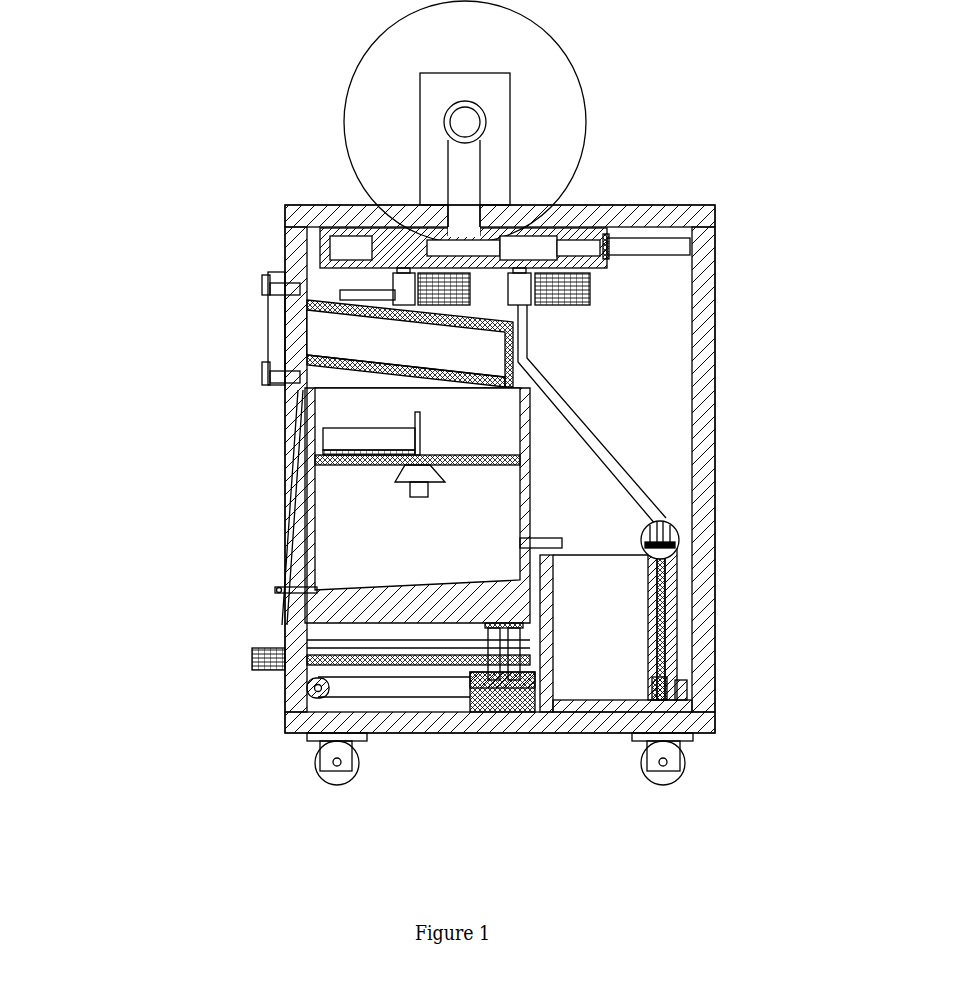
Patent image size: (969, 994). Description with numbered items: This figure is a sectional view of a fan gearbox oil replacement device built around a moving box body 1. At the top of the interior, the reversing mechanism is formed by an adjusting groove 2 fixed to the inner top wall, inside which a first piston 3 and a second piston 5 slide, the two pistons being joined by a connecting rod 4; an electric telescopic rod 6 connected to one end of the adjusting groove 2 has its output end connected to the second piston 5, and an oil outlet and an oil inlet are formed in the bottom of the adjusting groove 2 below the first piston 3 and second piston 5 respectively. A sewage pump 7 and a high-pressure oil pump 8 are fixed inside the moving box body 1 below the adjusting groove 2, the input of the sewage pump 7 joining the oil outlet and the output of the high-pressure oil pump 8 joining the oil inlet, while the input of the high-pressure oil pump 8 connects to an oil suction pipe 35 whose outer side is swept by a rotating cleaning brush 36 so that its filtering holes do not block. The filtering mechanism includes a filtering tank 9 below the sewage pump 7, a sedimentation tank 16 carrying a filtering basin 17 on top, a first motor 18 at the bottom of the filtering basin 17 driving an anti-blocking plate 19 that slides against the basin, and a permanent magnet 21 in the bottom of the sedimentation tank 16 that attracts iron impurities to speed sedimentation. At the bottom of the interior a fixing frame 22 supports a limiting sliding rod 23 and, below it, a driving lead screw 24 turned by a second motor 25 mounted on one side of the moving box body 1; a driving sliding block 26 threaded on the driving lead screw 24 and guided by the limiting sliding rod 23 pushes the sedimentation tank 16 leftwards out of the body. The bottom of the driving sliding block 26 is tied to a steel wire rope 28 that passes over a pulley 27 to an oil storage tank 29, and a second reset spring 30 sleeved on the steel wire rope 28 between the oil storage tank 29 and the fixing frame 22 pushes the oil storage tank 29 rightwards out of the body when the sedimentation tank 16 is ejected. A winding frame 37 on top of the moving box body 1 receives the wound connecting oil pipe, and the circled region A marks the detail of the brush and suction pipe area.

The moving box body 1 is at (703, 423).
The adjusting groove 2 is at (307, 267).
The first piston 3 is at (365, 245).
The connecting rod 4 is at (420, 236).
The second piston 5 is at (550, 240).
The electric telescopic rod 6 is at (690, 241).
The sewage pump 7 is at (393, 280).
The high-pressure oil pump 8 is at (593, 289).
The filtering tank 9 is at (280, 342).
The sedimentation tank 16 is at (308, 545).
The filtering basin 17 is at (305, 399).
The first motor 18 is at (407, 491).
The anti-blocking plate 19 is at (340, 437).
The permanent magnet 21 is at (285, 600).
The fixing frame 22 is at (535, 708).
The limiting sliding rod 23 is at (307, 640).
The driving lead screw 24 is at (305, 660).
The second motor 25 is at (252, 660).
The driving sliding block 26 is at (470, 683).
The pulley 27 is at (307, 683).
The steel wire rope 28 is at (340, 715).
The oil storage tank 29 is at (609, 712).
The second reset spring 30 is at (503, 690).
The oil suction pipe 35 is at (667, 665).
The cleaning brush 36 is at (677, 584).
The winding frame 37 is at (505, 83).
The detail area A is at (677, 525).